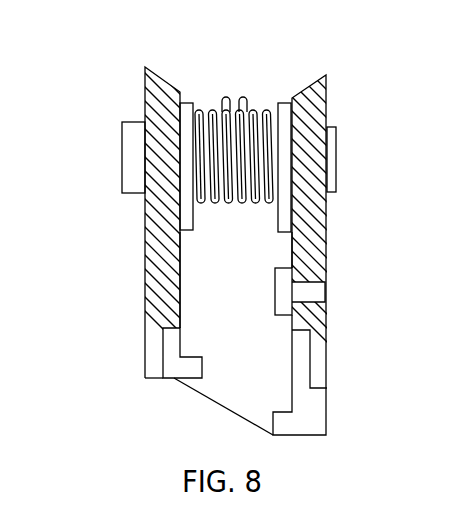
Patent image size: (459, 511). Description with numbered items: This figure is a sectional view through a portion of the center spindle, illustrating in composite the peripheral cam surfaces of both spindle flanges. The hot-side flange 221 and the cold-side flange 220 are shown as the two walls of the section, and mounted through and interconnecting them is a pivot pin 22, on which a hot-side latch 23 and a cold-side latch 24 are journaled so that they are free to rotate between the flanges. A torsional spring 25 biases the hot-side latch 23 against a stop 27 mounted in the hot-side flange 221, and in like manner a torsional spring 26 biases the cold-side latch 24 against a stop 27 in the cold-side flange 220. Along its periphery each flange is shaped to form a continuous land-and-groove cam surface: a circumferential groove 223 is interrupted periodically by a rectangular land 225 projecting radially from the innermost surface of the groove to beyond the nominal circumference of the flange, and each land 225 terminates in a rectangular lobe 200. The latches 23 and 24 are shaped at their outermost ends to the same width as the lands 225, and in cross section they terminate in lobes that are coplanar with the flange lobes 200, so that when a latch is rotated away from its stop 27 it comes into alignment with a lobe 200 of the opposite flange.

The pivot pin 22 is at (122, 155).
The hot-side latch 23 is at (180, 133).
The cold-side latch 24 is at (282, 162).
The torsional spring 25 is at (215, 112).
The torsional spring 26 is at (248, 112).
The stop 27 is at (322, 290).
The cold-side flange 220 is at (327, 237).
The hot-side flange 221 is at (146, 306).
The circumferential groove 223 is at (310, 385).
The rectangular land 225 is at (292, 357).
The rectangular lobe 200 is at (272, 413).